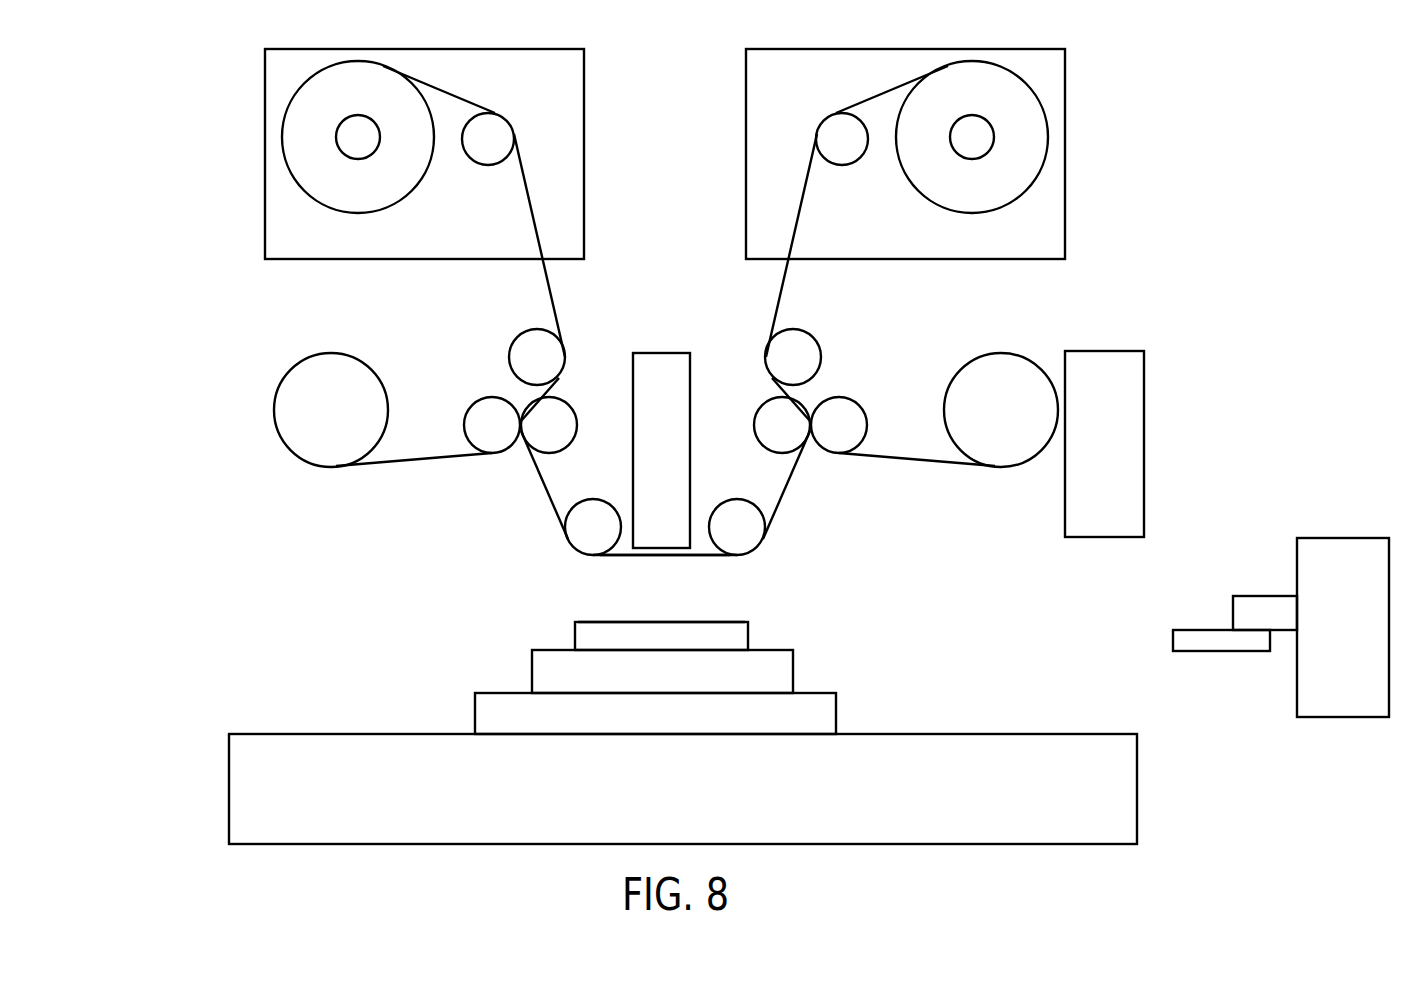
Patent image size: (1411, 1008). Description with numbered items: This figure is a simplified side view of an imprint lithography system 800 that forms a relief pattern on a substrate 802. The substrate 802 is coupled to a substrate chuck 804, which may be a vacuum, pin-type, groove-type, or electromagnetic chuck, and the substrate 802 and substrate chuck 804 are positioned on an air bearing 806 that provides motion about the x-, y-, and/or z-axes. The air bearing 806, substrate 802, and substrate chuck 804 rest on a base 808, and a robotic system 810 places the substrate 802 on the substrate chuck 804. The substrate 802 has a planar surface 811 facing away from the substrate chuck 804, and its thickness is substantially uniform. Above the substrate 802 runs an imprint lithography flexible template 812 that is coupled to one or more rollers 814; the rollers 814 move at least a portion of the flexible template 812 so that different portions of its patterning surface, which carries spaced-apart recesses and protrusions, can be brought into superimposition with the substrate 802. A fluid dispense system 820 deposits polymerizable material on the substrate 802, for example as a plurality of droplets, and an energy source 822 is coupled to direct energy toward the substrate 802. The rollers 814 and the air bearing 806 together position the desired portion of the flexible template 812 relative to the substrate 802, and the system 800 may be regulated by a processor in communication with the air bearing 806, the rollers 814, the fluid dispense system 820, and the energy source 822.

The imprint lithography system 800 is at (157, 80).
The substrate 802 is at (571, 633).
The substrate chuck 804 is at (528, 675).
The air bearing 806 is at (471, 715).
The base 808 is at (225, 780).
The robotic system 810 is at (1332, 535).
The planar surface 811 is at (592, 618).
The flexible template 812 is at (711, 562).
The rollers 814 is at (510, 343).
The fluid dispense system 820 is at (1148, 363).
The energy source 822 is at (657, 350).